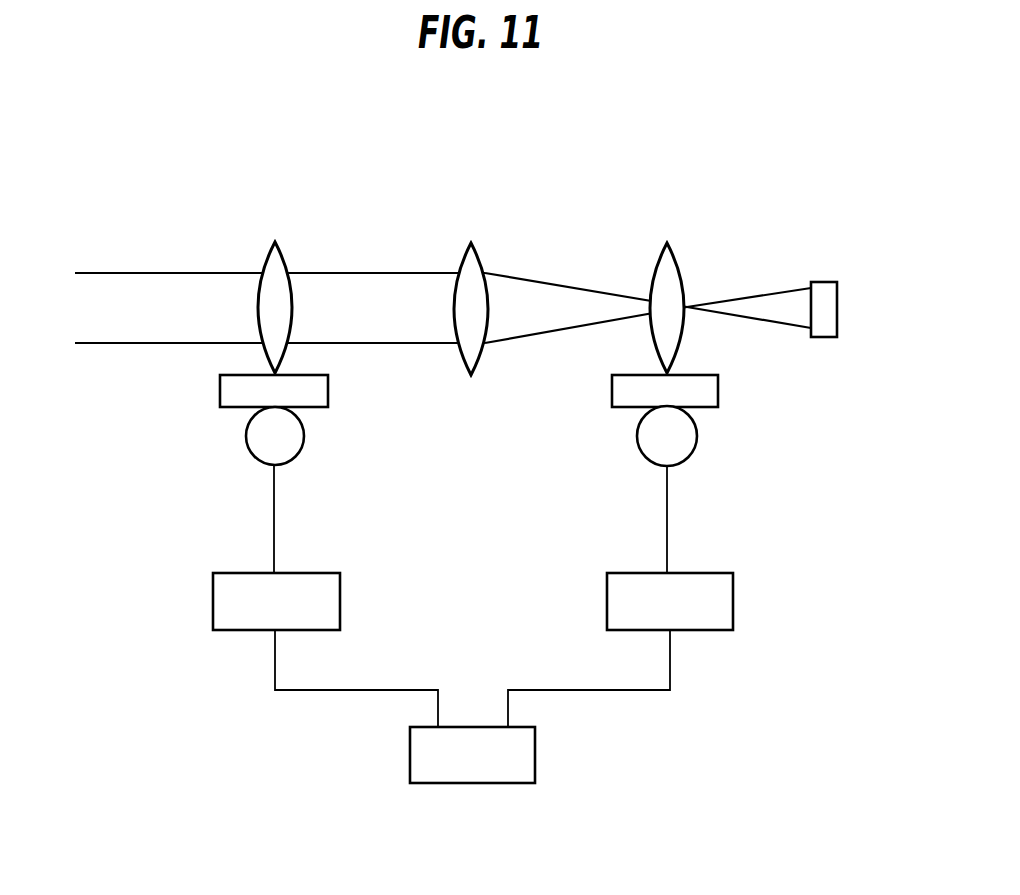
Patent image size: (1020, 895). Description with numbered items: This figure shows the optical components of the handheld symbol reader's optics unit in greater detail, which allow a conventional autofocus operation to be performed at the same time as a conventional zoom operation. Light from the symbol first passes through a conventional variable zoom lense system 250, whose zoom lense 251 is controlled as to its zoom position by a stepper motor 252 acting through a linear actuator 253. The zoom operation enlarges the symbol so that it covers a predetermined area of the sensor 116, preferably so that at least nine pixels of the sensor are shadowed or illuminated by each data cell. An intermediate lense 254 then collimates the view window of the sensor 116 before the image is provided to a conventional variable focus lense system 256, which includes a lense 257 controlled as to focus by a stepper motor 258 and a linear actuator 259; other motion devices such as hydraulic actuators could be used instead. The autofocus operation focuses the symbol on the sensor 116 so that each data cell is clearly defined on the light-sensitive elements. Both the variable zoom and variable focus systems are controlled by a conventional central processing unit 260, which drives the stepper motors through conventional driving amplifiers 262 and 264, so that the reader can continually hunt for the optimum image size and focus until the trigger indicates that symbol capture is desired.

The sensor 116 is at (830, 282).
The variable zoom lense system 250 is at (310, 252).
The zoom lense 251 is at (263, 258).
The stepper motor 252 is at (297, 455).
The linear actuator 253 is at (220, 393).
The intermediate lense 254 is at (462, 253).
The variable focus lense system 256 is at (704, 252).
The lense 257 is at (657, 257).
The stepper motor 258 is at (690, 455).
The linear actuator 259 is at (718, 393).
The central processing unit 260 is at (535, 745).
The driving amplifier 262 is at (692, 573).
The driving amplifier 264 is at (310, 573).